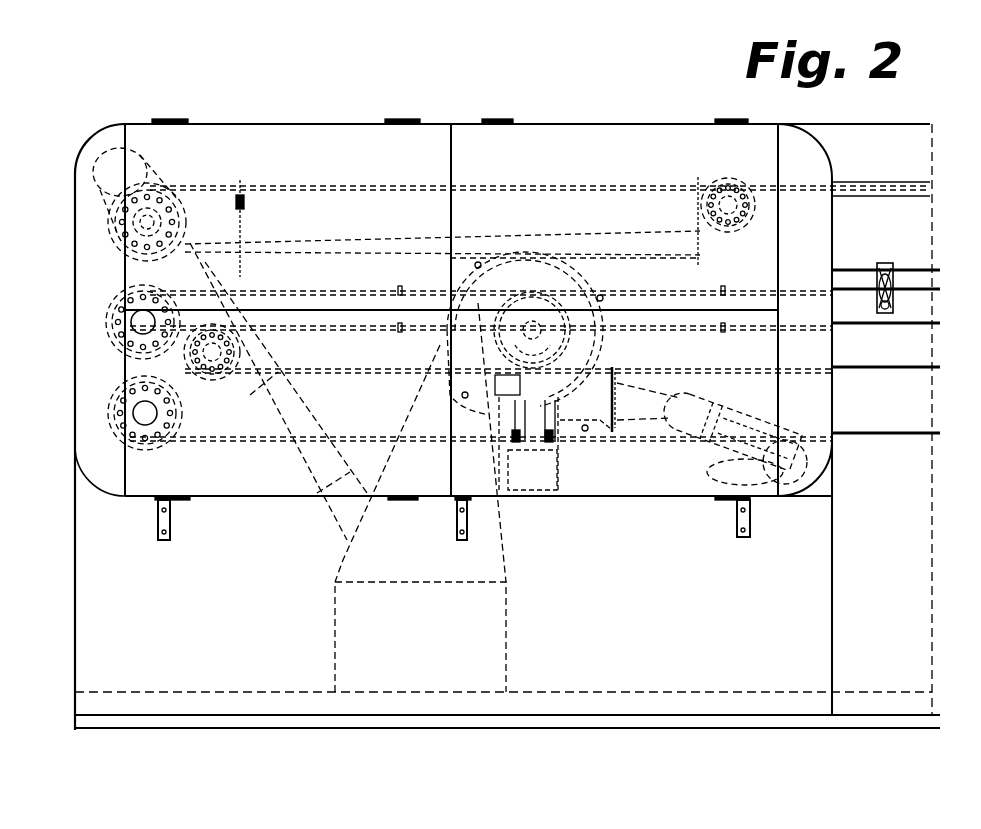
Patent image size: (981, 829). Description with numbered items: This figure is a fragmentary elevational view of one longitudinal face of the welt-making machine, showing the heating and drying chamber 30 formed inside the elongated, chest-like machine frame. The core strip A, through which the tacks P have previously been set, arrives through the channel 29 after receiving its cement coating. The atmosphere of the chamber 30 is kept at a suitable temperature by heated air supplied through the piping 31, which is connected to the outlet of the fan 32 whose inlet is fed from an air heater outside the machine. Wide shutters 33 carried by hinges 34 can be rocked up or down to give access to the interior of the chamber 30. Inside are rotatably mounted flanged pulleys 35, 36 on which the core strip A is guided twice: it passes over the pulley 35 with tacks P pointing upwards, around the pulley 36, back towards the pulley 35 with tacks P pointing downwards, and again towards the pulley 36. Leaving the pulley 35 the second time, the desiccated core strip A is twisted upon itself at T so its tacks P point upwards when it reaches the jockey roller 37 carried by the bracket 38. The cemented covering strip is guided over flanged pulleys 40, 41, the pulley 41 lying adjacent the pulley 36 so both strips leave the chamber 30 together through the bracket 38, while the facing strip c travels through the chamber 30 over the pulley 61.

The channel 29 is at (867, 193).
The heating and drying chamber 30 is at (530, 309).
The piping 31 is at (278, 425).
The fan 32 is at (550, 373).
The shutters 33 is at (305, 152).
The hinges 34 is at (492, 120).
The flanged pulley 35 is at (727, 193).
The flanged pulley 36 is at (160, 192).
The jockey roller 37 is at (895, 265).
The bracket 38 is at (893, 294).
The flanged pulley 40 is at (138, 462).
The flanged pulley 41 is at (120, 296).
The pulley 61 is at (210, 373).
The core strip A is at (893, 185).
The tacks P is at (860, 268).
The twisting point T is at (465, 260).
The strip c is at (880, 323).